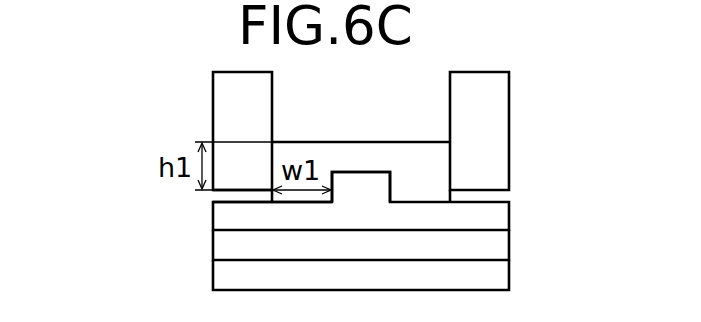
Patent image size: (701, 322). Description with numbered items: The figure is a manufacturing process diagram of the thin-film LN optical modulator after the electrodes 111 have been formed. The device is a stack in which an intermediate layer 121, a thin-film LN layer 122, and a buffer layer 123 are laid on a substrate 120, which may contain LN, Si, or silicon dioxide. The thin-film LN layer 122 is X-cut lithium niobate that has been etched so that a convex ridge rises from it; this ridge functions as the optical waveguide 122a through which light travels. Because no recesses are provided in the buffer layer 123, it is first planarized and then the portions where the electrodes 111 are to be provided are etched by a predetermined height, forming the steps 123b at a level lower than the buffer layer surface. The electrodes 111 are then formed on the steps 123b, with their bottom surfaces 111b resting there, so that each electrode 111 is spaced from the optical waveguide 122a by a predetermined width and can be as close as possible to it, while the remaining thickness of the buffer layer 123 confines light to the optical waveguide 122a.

The electrode 111 is at (222, 107).
The bottom surface of 111 111b is at (159, 229).
The substrate 120 is at (492, 278).
The intermediate layer 121 is at (492, 253).
The thin-film LN layer 122 is at (492, 220).
The optical waveguide 122a is at (358, 186).
The buffer layer 123 is at (430, 178).
The step 123b is at (242, 190).